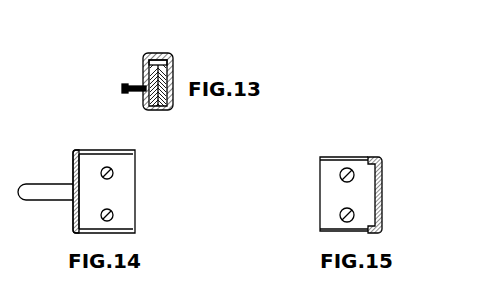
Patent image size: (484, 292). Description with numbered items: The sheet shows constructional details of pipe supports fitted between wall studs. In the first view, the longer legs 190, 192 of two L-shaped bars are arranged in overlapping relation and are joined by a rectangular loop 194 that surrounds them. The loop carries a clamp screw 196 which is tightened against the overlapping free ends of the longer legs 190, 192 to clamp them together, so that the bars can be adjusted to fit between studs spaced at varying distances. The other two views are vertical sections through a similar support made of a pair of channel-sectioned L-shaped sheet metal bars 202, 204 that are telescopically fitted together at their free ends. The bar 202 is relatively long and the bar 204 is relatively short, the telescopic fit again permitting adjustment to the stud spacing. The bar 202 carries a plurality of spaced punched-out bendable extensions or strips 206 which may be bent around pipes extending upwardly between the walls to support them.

In FIG. 13, the longer leg 190 is at (171, 72).
In FIG. 13, the longer leg 192 is at (146, 100).
In FIG. 13, the rectangular loop 194 is at (161, 53).
In FIG. 13, the clamp screw 196 is at (123, 88).
In FIG. 14, the L-shaped sheet metal bar 202 is at (73, 153).
In FIG. 15, the L-shaped sheet metal bar 202 is at (384, 173).
In FIG. 15, the L-shaped sheet metal bar 204 is at (322, 197).
In FIG. 14, the bendable extension 206 is at (46, 202).